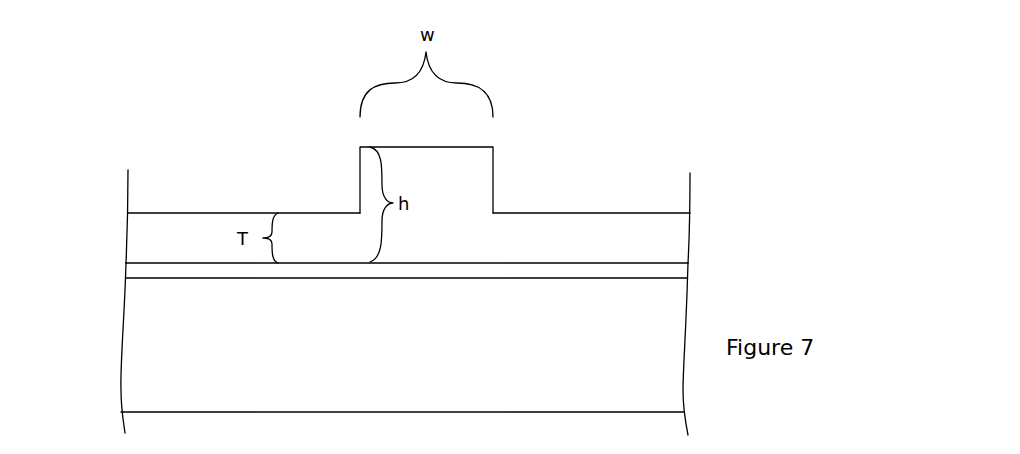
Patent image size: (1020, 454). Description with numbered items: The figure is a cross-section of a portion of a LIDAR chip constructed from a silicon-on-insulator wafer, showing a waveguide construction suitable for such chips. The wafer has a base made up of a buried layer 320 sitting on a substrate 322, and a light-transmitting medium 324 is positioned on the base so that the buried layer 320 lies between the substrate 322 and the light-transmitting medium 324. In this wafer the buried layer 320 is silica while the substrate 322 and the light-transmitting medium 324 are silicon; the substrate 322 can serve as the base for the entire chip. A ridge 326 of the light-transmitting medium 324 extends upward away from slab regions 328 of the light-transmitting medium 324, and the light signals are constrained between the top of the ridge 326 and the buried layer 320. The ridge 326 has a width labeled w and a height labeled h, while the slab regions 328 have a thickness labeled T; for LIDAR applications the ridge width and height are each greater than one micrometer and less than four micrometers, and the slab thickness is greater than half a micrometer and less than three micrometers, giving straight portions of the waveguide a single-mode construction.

The buried layer 320 is at (282, 275).
The substrate 322 is at (133, 390).
The light-transmitting medium 324 is at (176, 242).
The ridge 326 is at (515, 170).
The slab regions 328 is at (265, 212).